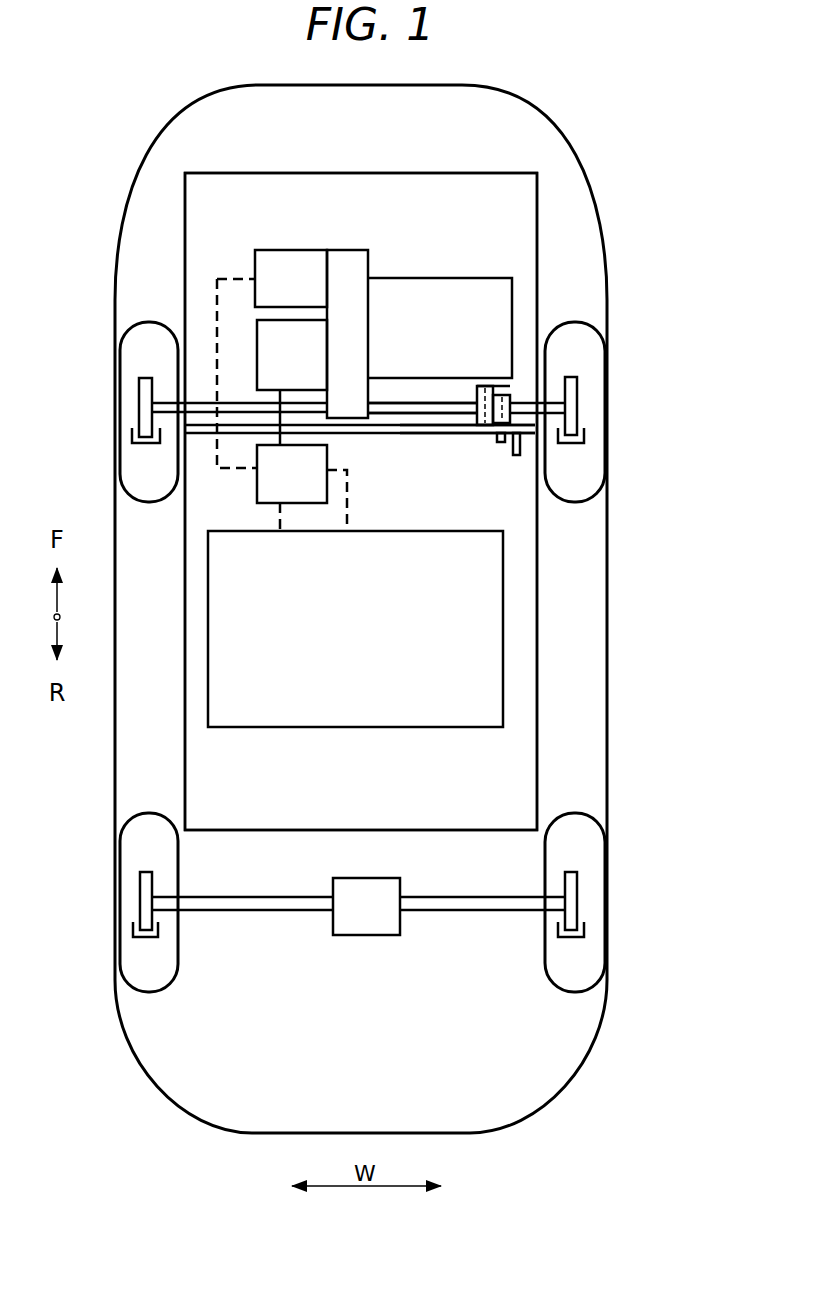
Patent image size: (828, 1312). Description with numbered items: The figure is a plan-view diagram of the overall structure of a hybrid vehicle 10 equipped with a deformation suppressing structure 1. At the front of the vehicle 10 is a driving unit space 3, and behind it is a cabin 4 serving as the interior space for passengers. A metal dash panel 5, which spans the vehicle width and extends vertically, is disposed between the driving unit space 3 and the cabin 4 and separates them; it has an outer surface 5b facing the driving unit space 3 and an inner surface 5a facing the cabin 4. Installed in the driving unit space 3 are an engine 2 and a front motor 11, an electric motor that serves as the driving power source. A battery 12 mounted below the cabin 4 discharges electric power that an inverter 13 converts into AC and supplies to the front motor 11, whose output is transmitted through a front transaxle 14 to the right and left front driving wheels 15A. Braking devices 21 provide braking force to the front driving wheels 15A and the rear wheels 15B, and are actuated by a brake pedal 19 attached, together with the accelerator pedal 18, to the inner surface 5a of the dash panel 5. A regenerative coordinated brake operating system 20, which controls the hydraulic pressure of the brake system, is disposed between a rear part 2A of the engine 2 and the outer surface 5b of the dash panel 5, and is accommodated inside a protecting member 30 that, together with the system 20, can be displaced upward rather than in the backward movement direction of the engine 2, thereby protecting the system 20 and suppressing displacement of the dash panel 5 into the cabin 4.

The hybrid vehicle 10 is at (574, 151).
The driving unit space 3 is at (484, 221).
The cabin 4 is at (222, 807).
The front driving wheels 15A is at (120, 413).
The rear wheels 15B is at (120, 905).
The braking devices 21 is at (136, 392).
The dash panel 5 is at (350, 434).
The inner surface 5a is at (407, 434).
The outer surface 5b is at (407, 403).
The deformation suppressing structure 1 is at (466, 410).
The front motor 11 is at (255, 347).
The front transaxle 14 is at (345, 252).
The engine 2 is at (443, 292).
The protecting member 30 is at (488, 386).
The rear part 2A is at (515, 388).
The regenerative coordinated brake operating system 20 is at (508, 385).
The brake pedal 19 is at (499, 443).
The accelerator pedal 18 is at (517, 456).
The inverter 13 is at (257, 500).
The battery 12 is at (360, 728).